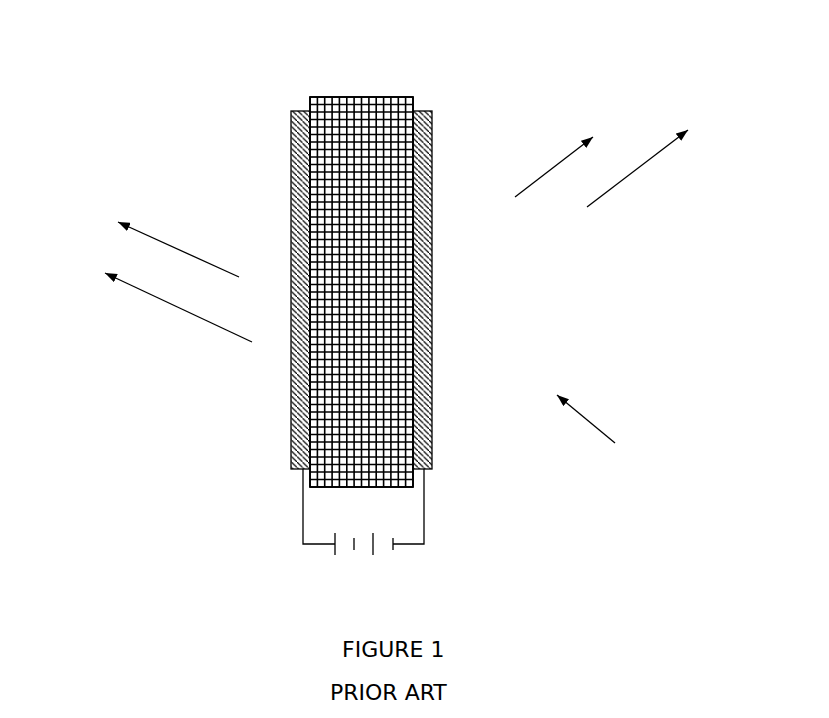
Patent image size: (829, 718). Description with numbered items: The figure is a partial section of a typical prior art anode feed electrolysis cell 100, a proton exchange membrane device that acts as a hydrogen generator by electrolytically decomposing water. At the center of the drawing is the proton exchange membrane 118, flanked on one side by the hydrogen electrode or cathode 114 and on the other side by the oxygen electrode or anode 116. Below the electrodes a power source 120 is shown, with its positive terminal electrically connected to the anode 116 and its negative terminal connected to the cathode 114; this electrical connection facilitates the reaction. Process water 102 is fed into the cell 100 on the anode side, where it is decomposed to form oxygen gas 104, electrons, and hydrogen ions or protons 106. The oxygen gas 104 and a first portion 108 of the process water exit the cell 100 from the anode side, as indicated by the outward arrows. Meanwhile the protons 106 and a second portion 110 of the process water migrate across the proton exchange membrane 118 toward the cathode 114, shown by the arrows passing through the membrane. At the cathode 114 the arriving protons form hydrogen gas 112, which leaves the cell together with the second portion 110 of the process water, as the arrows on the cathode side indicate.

The anode feed electrolysis cell 100 is at (458, 72).
The process water 102 is at (610, 437).
The oxygen gas 104 is at (571, 155).
The hydrogen ions (protons) 106 is at (390, 306).
The first portion of the process water 108 is at (656, 153).
The second portion of process water 110 is at (548, 347).
The hydrogen gas 112 is at (158, 238).
The hydrogen electrode (cathode) 114 is at (303, 112).
The anode 116 is at (423, 110).
The proton exchange membrane 118 is at (362, 98).
The power source 120 is at (424, 513).